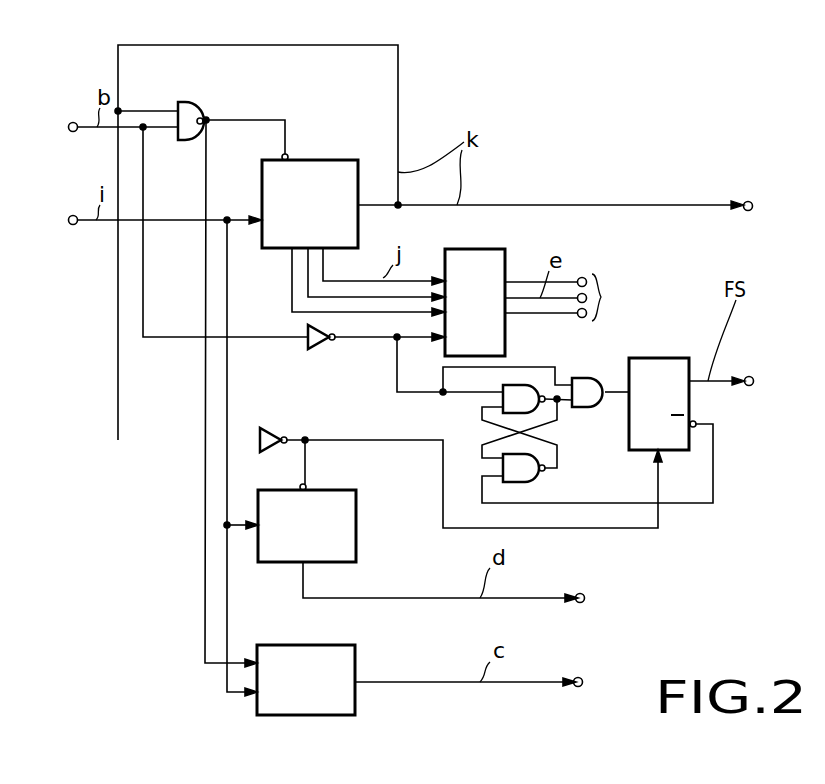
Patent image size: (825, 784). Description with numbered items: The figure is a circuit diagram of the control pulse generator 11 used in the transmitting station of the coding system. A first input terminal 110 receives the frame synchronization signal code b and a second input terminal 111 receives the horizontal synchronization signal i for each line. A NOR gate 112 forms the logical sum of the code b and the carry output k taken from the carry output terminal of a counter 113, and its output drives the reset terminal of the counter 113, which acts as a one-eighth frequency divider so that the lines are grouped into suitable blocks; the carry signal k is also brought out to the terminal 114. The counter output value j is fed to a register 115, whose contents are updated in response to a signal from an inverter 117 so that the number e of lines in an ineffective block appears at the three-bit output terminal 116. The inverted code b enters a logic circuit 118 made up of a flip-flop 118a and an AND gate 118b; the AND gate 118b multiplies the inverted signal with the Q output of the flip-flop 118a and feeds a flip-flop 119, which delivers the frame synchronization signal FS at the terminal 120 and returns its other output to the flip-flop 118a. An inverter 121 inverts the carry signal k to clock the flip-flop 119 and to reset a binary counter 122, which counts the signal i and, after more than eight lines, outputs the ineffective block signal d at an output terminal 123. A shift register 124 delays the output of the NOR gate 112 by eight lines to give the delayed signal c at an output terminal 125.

The control pulse generator 11 is at (753, 42).
The first input terminal 110 is at (71, 131).
The second input terminal 111 is at (70, 225).
The NOR gate 112 is at (197, 102).
The counter 113 is at (322, 160).
The output terminal (signal k) 114 is at (750, 200).
The register 115 is at (500, 249).
The output terminal 116 is at (567, 297).
The inverter 117 is at (324, 346).
The logic circuit 118 is at (557, 416).
The flip-flop 118a is at (466, 430).
The AND gate 118b is at (593, 378).
The flip-flop 119 is at (665, 358).
The output terminal (signal FS) 120 is at (749, 376).
The inverter 121 is at (270, 428).
The binary counter 122 is at (356, 530).
The output terminal 123 is at (583, 594).
The shift register 124 is at (356, 657).
The output terminal 125 is at (582, 678).